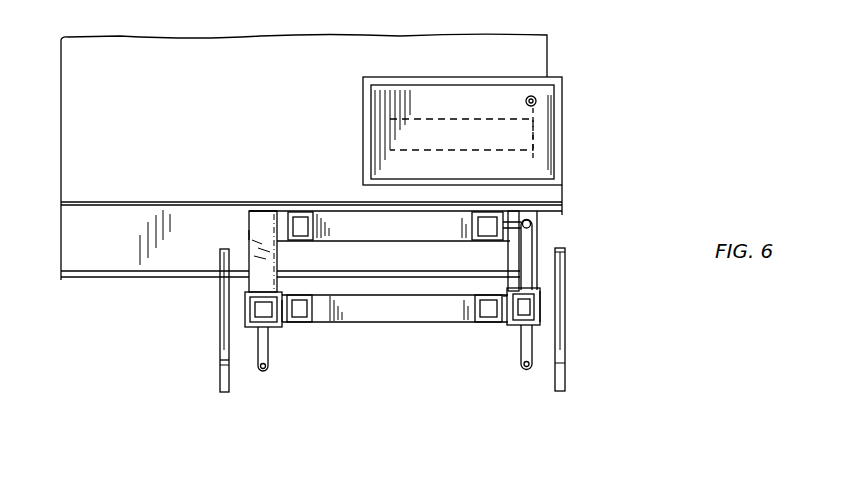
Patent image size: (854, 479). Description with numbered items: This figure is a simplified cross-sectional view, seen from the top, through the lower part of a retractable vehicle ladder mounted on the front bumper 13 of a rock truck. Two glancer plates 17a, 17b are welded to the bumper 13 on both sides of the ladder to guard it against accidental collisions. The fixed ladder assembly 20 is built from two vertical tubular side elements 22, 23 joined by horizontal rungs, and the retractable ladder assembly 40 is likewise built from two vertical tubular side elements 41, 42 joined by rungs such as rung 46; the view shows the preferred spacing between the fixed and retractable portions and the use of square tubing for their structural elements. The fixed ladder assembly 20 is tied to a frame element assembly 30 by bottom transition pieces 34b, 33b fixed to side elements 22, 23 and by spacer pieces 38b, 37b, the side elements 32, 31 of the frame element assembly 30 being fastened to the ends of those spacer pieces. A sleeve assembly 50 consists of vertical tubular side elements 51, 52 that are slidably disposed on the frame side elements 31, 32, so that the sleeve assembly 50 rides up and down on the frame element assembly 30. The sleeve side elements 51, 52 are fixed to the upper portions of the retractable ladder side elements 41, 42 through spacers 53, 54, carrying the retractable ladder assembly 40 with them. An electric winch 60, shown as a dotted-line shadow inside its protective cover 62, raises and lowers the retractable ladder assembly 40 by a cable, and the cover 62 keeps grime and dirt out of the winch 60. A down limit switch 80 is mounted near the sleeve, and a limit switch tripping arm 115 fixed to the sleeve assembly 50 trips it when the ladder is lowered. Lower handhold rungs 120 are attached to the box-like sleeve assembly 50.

The front bumper 13 is at (73, 282).
The fixed ladder assembly 20 is at (343, 202).
The vertical tubular side element 22 is at (303, 241).
The vertical tubular side element 23 is at (485, 241).
The frame element assembly 30 is at (246, 290).
The side element 31 is at (516, 328).
The side element 32 is at (245, 323).
The transition piece 33b is at (520, 205).
The transition piece 34b is at (283, 206).
The spacer piece 37b is at (537, 262).
The spacer piece 38b is at (248, 233).
The retractable ladder assembly 40 is at (378, 325).
The vertical tubular side element 41 is at (482, 324).
The vertical tubular side element 42 is at (305, 325).
The horizontal rung 46 is at (418, 325).
The sleeve assembly 50 is at (542, 307).
The vertical tubular side element 51 is at (542, 322).
The vertical tubular side element 52 is at (221, 363).
The spacer 53 is at (505, 324).
The spacer 54 is at (283, 327).
The electric winch 60 is at (502, 125).
The protective cover 62 is at (562, 110).
The down limit switch 80 is at (535, 216).
The limit switch tripping arm 115 is at (537, 237).
The lower handhold rung 120 is at (262, 371).
The glancer plate 17a is at (565, 386).
The glancer plate 17b is at (222, 393).